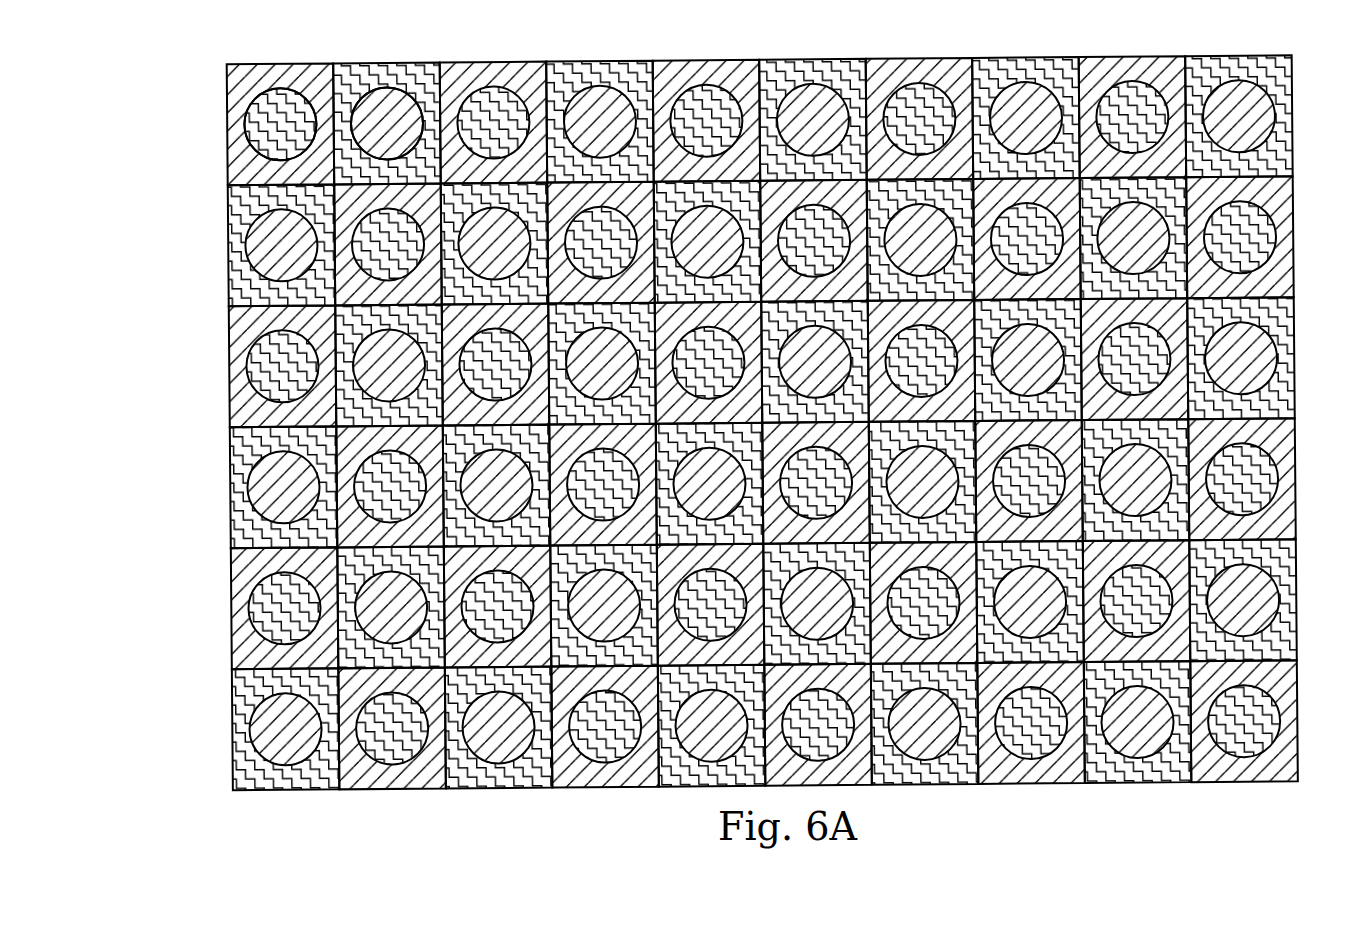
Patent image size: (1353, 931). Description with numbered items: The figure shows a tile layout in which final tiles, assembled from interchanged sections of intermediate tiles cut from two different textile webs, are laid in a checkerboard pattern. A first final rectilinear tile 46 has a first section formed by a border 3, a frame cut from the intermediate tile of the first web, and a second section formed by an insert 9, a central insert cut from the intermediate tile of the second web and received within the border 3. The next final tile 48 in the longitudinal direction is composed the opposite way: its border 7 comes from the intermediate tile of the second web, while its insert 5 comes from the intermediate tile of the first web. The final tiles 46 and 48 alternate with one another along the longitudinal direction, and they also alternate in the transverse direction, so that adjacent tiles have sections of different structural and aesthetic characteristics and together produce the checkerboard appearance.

The final rectilinear tile 46 is at (253, 64).
The border 3 is at (237, 83).
The insert 9 is at (249, 162).
The border 7 is at (353, 77).
The final tile 48 is at (397, 103).
The insert 5 is at (408, 87).